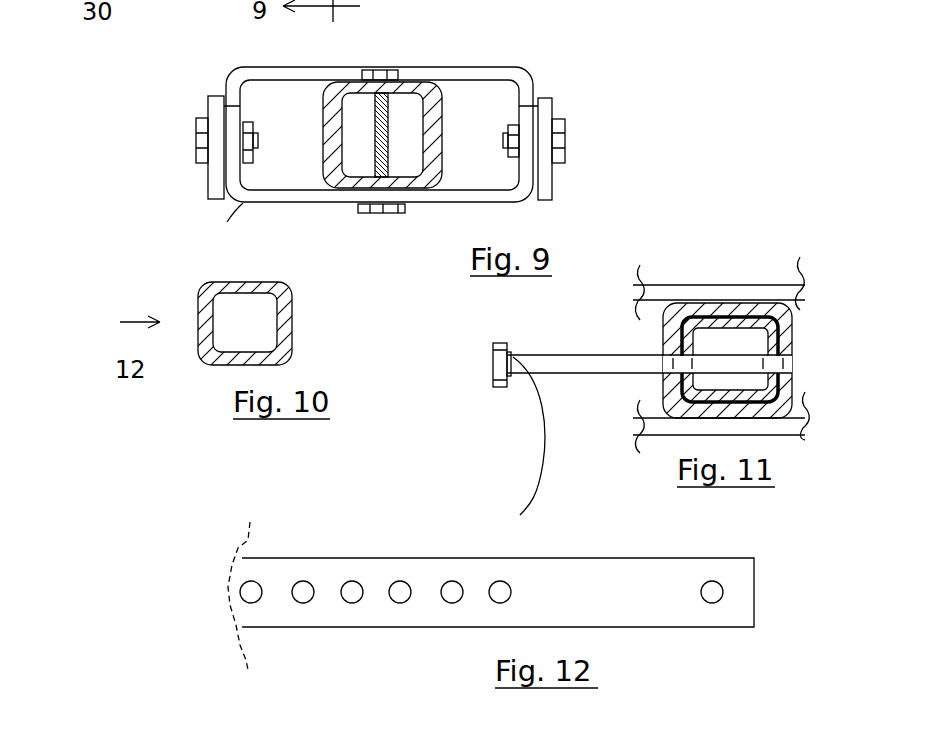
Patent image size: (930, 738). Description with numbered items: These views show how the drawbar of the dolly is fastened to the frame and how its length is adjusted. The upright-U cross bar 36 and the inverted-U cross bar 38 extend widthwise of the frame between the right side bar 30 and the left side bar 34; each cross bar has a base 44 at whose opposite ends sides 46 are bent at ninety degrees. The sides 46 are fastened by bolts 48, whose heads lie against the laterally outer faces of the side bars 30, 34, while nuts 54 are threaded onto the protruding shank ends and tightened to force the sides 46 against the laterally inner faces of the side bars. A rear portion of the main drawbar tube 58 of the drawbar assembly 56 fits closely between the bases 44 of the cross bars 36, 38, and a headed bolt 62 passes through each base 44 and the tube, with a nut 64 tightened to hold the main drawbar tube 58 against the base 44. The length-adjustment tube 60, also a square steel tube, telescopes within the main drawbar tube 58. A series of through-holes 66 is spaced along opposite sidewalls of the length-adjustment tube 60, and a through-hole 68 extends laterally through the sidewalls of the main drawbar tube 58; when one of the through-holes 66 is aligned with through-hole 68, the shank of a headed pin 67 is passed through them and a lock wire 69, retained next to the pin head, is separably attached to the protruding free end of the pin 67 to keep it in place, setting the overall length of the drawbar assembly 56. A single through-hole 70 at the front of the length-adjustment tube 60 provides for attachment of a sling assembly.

In FIG. 9, the right side bar 30 is at (212, 96).
In FIG. 9, the left side bar 34 is at (553, 97).
In FIG. 9, the upright-U cross bar 36 is at (222, 228).
In FIG. 11, the upright-U cross bar 36 is at (783, 437).
In FIG. 9, the inverted-U cross bar 38 is at (517, 67).
In FIG. 11, the inverted-U cross bar 38 is at (783, 287).
In FIG. 9, the base 44 is at (327, 65).
In FIG. 9, the sides 46 is at (233, 117).
In FIG. 9, the bolts 48 is at (195, 137).
In FIG. 9, the nuts 54 is at (248, 160).
In FIG. 11, the drawbar assembly 56 is at (808, 342).
In FIG. 9, the main drawbar tube 58 is at (442, 135).
In FIG. 11, the main drawbar tube 58 is at (792, 325).
In FIG. 9, the length-adjustment tube 60 is at (381, 135).
In FIG. 10, the length-adjustment tube 60 is at (293, 302).
In FIG. 11, the length-adjustment tube 60 is at (717, 393).
In FIG. 12, the length-adjustment tube 60 is at (647, 628).
In FIG. 9, the headed bolt 62 is at (402, 213).
In FIG. 9, the nut 64 is at (397, 77).
In FIG. 11, the through-holes 66 is at (757, 358).
In FIG. 12, the through-holes 66 is at (348, 577).
In FIG. 11, the headed pin 67 is at (590, 375).
In FIG. 11, the through-hole 68 is at (677, 360).
In FIG. 11, the lock wire 69 is at (547, 460).
In FIG. 12, the through-hole 70 is at (713, 582).